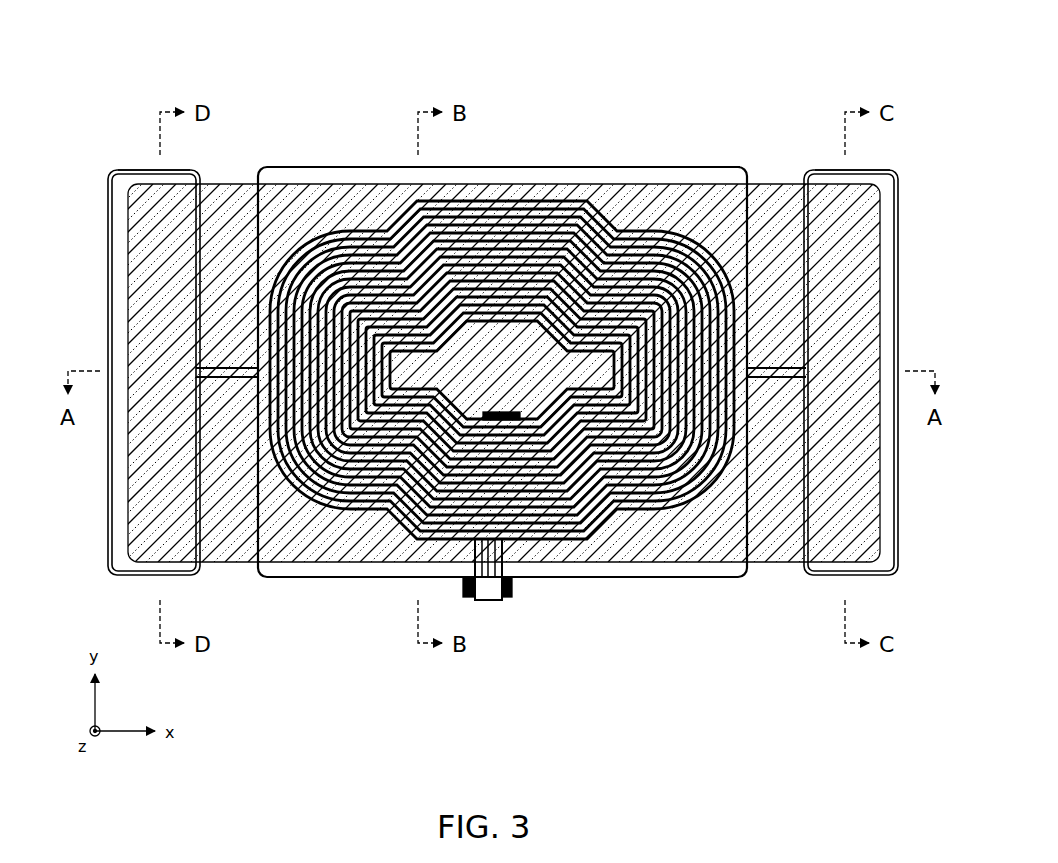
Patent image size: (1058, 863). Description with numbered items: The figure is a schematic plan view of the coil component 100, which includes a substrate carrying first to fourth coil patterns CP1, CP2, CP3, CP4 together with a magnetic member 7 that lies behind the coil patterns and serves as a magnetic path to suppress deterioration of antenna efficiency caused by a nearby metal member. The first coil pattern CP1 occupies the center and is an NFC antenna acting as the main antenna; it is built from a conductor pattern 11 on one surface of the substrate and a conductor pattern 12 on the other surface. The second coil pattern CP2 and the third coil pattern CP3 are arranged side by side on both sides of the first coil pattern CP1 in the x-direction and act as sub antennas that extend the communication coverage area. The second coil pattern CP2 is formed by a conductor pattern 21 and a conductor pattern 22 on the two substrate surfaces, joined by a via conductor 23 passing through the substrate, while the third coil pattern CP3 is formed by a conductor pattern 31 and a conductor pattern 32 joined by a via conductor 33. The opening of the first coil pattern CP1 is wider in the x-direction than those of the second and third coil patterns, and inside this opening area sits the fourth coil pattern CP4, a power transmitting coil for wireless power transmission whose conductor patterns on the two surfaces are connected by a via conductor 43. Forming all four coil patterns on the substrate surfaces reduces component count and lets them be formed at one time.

The coil component 100 is at (836, 36).
The magnetic member 7 is at (768, 578).
The conductor pattern 11 is at (336, 578).
The conductor pattern 12 is at (338, 167).
The conductor pattern 21 is at (875, 170).
The conductor pattern 22 is at (812, 380).
The via conductor 23 is at (817, 392).
The conductor pattern 31 is at (108, 258).
The conductor pattern 32 is at (193, 367).
The via conductor 33 is at (199, 355).
The via conductor 43 is at (506, 410).
The first coil pattern CP1 is at (662, 150).
The second coil pattern CP2 is at (813, 164).
The third coil pattern CP3 is at (120, 166).
The fourth coil pattern CP4 is at (535, 200).